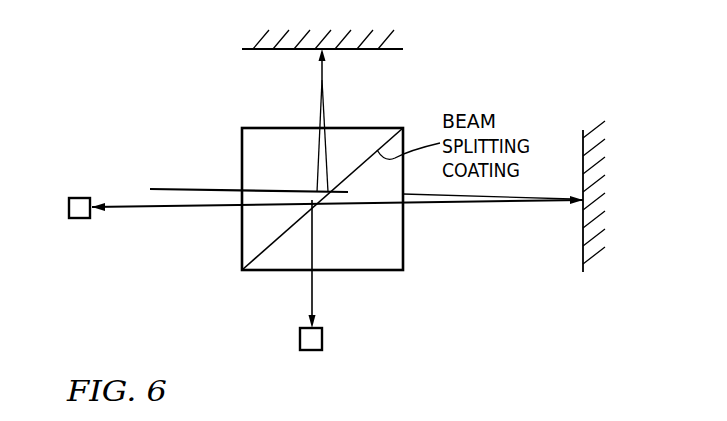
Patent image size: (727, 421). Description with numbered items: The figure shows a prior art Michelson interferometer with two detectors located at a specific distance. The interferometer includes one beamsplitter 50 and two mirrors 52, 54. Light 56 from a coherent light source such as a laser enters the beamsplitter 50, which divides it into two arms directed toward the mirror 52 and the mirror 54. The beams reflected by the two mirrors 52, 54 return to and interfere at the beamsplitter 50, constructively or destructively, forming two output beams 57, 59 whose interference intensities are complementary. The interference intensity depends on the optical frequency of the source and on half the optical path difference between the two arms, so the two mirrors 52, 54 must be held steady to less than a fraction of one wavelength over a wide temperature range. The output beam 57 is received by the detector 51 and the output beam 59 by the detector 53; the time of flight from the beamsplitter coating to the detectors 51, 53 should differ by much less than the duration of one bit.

The beamsplitter 50 is at (272, 127).
The detector 51 is at (76, 220).
The mirror 52 is at (362, 49).
The detector 53 is at (310, 352).
The mirror 54 is at (580, 252).
The light 56 is at (188, 187).
The output beam 57 is at (166, 209).
The output beam 59 is at (312, 290).